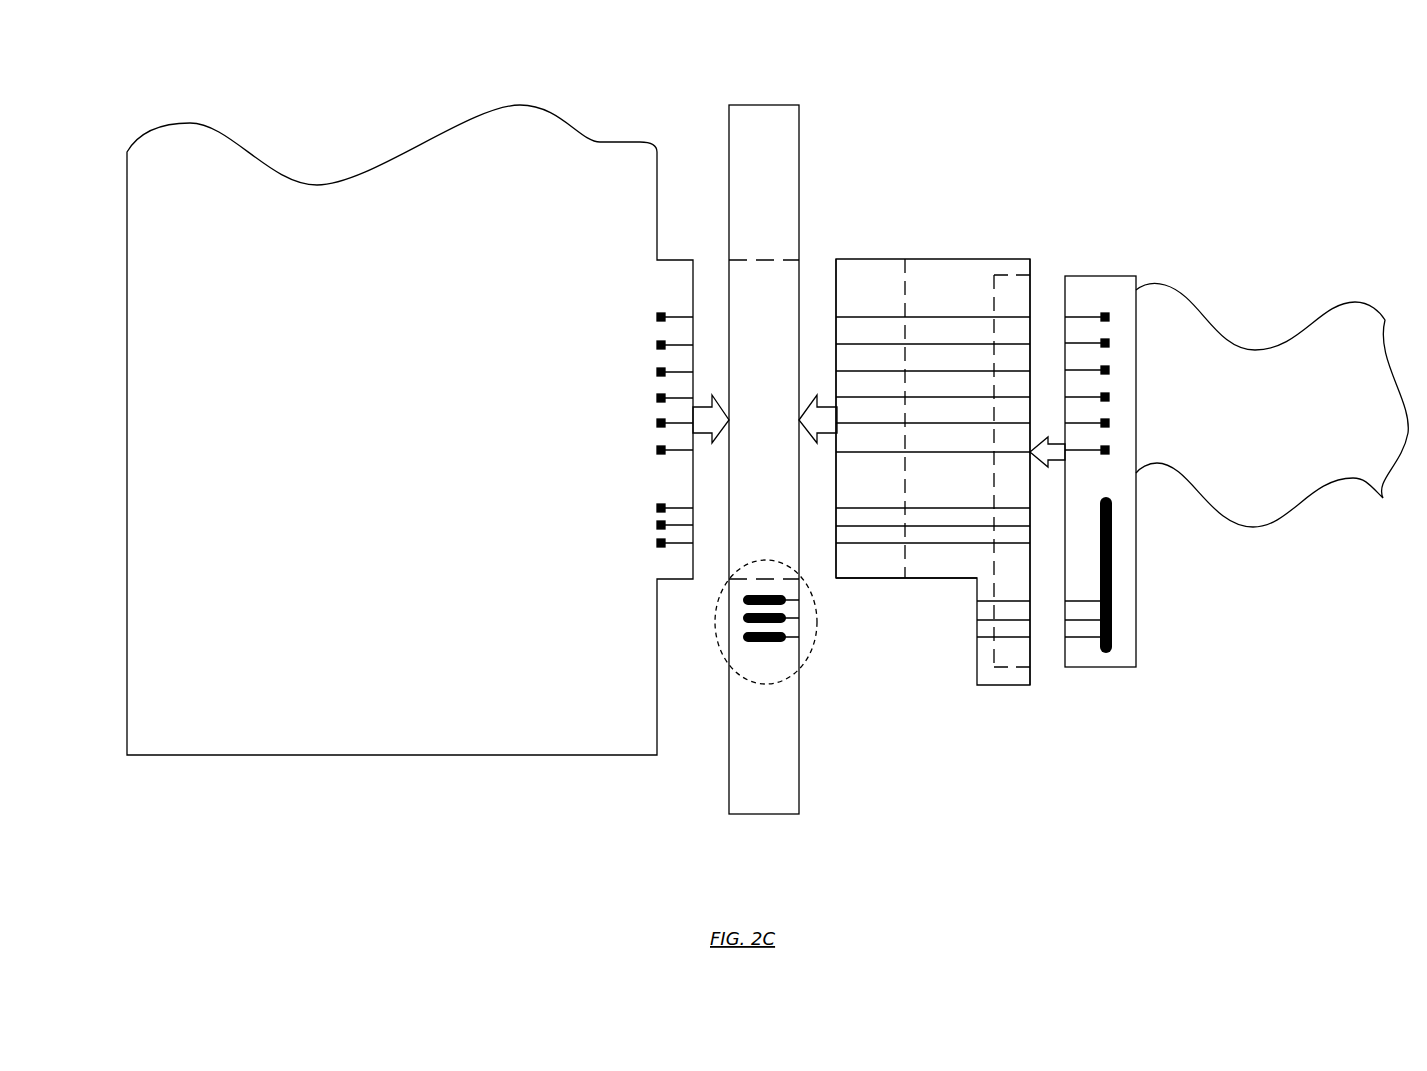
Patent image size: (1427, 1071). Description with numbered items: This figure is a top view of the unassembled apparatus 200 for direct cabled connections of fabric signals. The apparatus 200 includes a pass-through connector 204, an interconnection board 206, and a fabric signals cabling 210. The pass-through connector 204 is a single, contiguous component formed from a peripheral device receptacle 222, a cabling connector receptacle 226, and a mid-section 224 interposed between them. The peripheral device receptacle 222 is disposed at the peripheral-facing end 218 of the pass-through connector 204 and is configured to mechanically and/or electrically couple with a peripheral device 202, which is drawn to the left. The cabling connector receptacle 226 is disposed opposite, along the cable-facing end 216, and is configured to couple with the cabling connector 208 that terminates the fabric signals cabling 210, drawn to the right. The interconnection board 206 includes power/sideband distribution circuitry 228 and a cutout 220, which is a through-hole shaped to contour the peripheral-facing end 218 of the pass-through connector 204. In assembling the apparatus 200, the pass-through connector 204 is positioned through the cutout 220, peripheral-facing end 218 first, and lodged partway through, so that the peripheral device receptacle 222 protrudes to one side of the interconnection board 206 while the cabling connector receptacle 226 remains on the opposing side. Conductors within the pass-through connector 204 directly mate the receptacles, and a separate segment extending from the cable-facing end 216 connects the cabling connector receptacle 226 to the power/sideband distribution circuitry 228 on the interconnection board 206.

The apparatus 200 is at (1160, 120).
The peripheral device 202 is at (428, 430).
The pass-through connector 204 is at (1033, 459).
The interconnection board 206 is at (590, 461).
The cabling connector 208 is at (1126, 578).
The fabric signals cabling 210 is at (1272, 405).
The cable-facing end 216 is at (1030, 712).
The peripheral-facing end 218 is at (834, 707).
The cutout 220 is at (764, 419).
The peripheral device receptacle 222 is at (870, 295).
The mid-section 224 is at (958, 295).
The cabling connector receptacle 226 is at (1012, 301).
The power/sideband distribution circuitry 228 is at (716, 620).